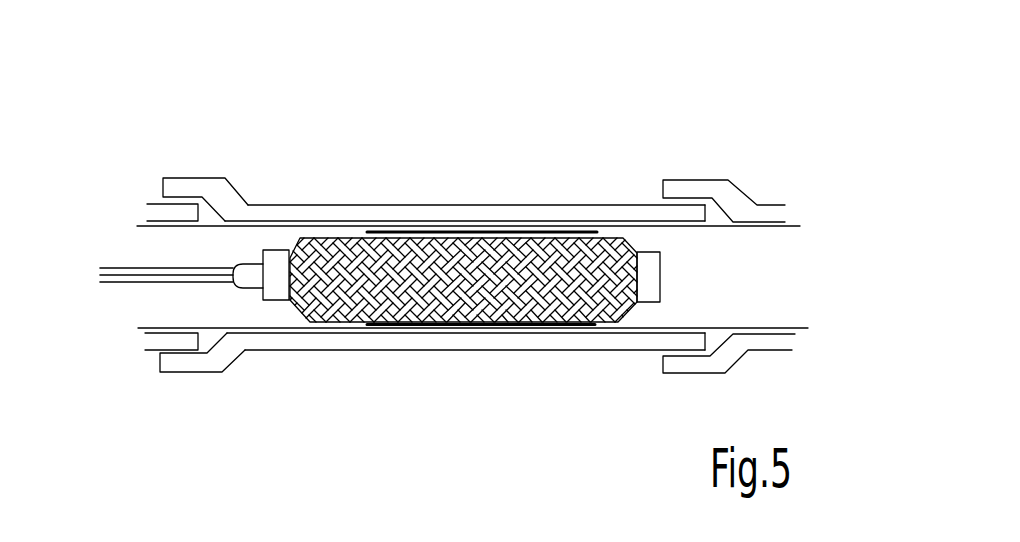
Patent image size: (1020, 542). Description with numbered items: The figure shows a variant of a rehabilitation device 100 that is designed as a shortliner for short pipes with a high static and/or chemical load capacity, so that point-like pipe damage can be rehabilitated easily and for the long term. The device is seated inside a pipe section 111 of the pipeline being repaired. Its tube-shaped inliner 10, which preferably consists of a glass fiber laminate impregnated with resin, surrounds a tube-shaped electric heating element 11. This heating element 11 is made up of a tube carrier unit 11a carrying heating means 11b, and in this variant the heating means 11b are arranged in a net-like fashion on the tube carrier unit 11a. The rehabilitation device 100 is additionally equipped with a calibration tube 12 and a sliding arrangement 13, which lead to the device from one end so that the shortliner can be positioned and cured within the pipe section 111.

The tube-shaped inliner 10 is at (348, 223).
The tube-shaped electric heating element 11 is at (461, 170).
The tube carrier unit 11a is at (465, 268).
The heating means 11b is at (555, 258).
The calibration tube 12 is at (596, 326).
The sliding arrangement 13 is at (130, 273).
The rehabilitation device 100 is at (712, 282).
The pipe section 111 is at (277, 345).